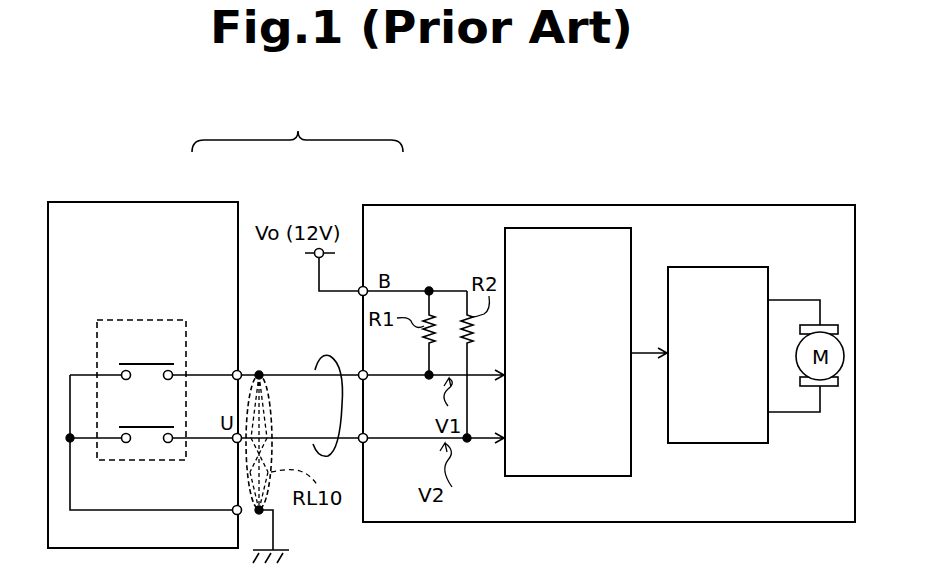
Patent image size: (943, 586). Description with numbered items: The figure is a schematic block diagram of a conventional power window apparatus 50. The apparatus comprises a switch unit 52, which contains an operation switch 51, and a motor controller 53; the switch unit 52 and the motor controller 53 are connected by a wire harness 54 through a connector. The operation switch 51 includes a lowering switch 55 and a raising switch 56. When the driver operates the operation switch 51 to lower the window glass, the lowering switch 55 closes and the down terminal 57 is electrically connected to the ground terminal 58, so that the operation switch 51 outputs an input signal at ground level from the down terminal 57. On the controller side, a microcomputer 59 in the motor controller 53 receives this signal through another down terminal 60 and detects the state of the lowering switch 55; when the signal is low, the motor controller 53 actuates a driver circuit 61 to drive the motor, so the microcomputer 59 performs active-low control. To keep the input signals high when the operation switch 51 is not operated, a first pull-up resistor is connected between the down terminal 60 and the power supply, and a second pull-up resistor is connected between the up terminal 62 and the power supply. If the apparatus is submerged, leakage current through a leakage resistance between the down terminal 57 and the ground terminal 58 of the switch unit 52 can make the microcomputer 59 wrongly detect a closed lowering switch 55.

The power window apparatus 50 is at (297, 126).
The operation switch 51 is at (97, 362).
The switch unit 52 is at (190, 202).
The motor controller 53 is at (390, 205).
The wire harness 54 is at (326, 356).
The lowering switch 55 is at (152, 350).
The raising switch 56 is at (152, 413).
The down terminal 57 is at (240, 370).
The ground terminal 58 is at (232, 515).
The microcomputer 59 is at (503, 252).
The down terminal 60 is at (360, 372).
The driver circuit 61 is at (745, 267).
The up terminal 62 is at (367, 442).